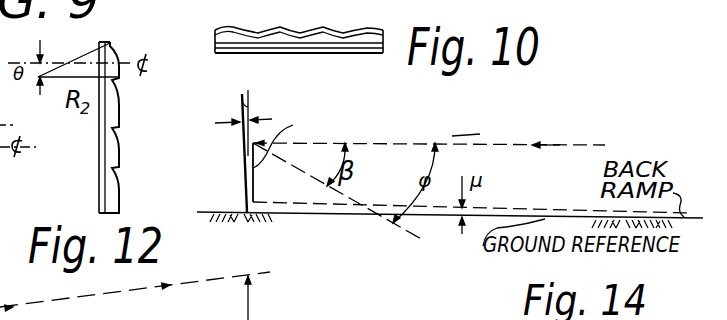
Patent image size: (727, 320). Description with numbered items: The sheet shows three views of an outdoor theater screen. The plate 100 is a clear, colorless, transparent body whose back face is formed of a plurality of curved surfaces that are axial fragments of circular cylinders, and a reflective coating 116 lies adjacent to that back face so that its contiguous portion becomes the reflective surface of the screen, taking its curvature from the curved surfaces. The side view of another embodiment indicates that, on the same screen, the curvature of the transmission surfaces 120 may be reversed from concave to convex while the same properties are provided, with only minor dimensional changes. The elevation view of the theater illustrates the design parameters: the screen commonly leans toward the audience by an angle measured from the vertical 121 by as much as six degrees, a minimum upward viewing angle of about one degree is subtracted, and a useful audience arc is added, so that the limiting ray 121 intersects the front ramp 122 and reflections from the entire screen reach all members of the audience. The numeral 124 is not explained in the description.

In FIG. 10, the plate 100 is at (337, 26).
In FIG. 10, the reflective coating 116 is at (357, 30).
In FIG. 12, the transmission surfaces 120 is at (110, 43).
In FIG. 14, the vertical 121 is at (238, 125).
In FIG. 14, the front ramp 122 is at (393, 222).
In FIG. 12, the travel path 124 is at (135, 296).